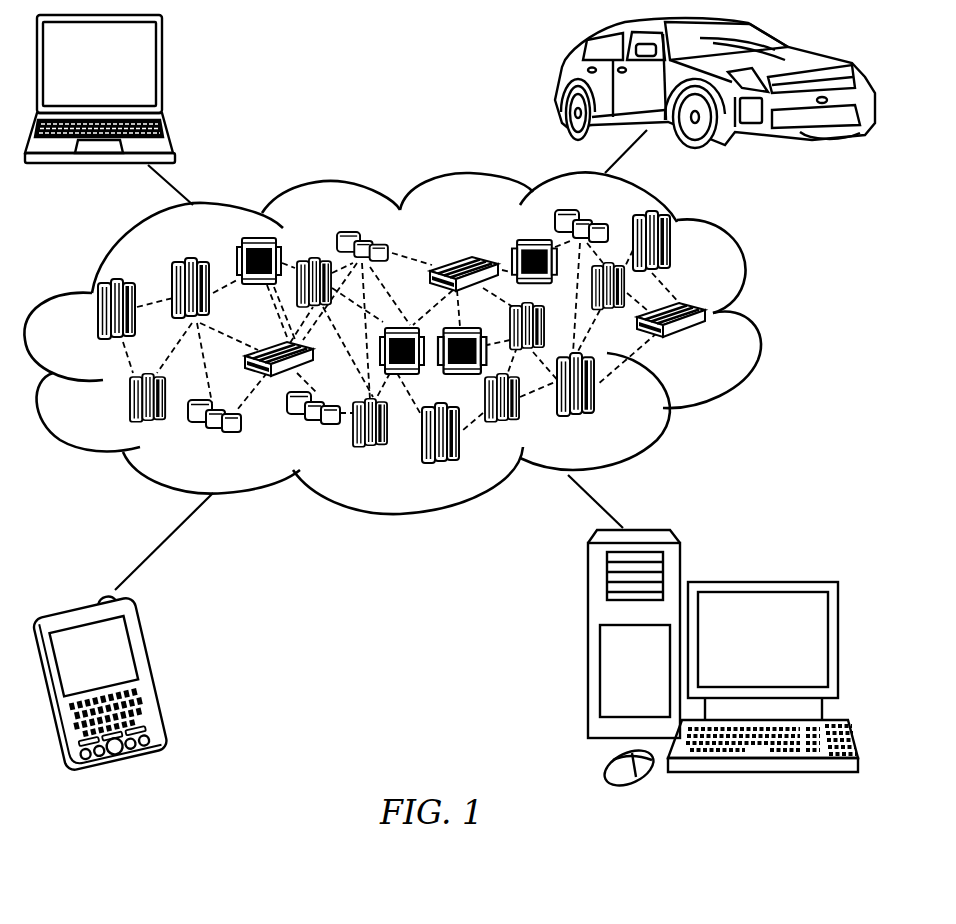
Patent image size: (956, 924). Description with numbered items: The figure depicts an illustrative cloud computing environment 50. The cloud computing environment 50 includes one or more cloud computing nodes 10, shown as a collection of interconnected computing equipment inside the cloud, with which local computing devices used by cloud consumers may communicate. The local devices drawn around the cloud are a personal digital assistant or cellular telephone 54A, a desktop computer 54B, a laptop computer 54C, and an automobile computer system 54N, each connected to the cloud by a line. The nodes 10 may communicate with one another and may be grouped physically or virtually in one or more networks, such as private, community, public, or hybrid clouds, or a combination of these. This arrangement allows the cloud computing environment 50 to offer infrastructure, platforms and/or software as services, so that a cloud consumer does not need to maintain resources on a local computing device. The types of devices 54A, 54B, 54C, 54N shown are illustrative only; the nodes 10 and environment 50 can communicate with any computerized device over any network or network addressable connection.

The cloud computing nodes 10 is at (449, 336).
The cloud computing environment 50 is at (762, 320).
The personal digital assistant (PDA) or cellular telephone 54A is at (152, 666).
The desktop computer 54B is at (760, 582).
The laptop computer 54C is at (163, 72).
The automobile computer system 54N is at (560, 87).